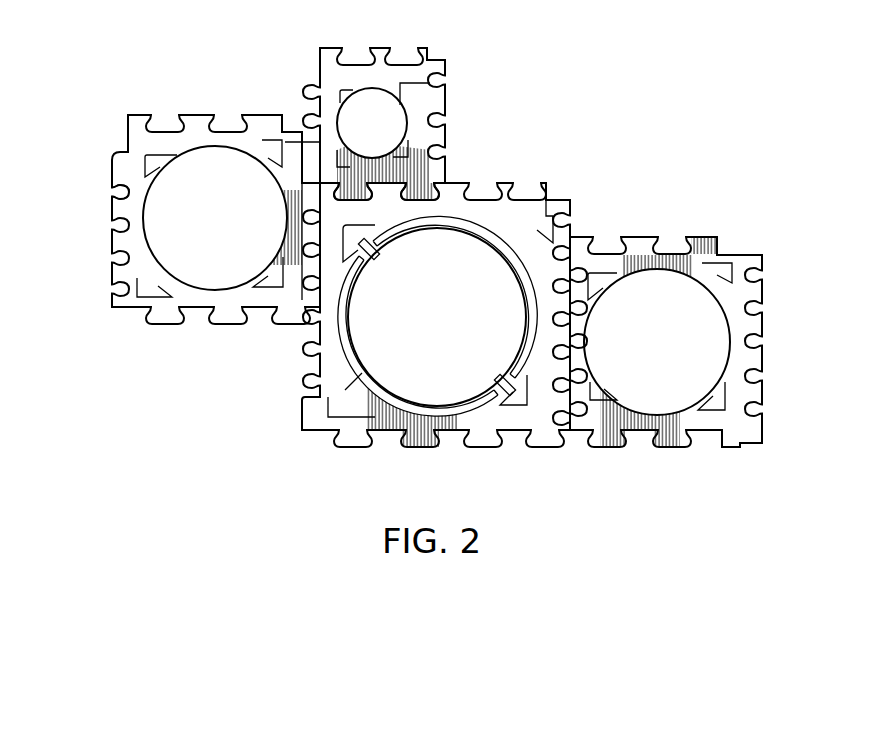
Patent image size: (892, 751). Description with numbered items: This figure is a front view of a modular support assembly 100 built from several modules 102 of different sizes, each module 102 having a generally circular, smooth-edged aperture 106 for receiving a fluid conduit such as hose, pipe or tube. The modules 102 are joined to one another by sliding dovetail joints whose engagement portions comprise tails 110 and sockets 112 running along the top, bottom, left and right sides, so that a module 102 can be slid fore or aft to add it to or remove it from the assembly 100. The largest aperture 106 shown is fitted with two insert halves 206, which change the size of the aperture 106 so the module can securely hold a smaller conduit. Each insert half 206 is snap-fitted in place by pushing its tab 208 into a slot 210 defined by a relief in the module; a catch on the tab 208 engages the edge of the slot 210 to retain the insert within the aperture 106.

The modular support assembly 100 is at (661, 107).
The module 102 is at (146, 354).
The aperture 106 is at (208, 175).
The tail 110 is at (110, 237).
The socket 112 is at (117, 207).
The insert half 206 is at (467, 233).
The tab 208 is at (366, 245).
The slot 210 is at (718, 412).